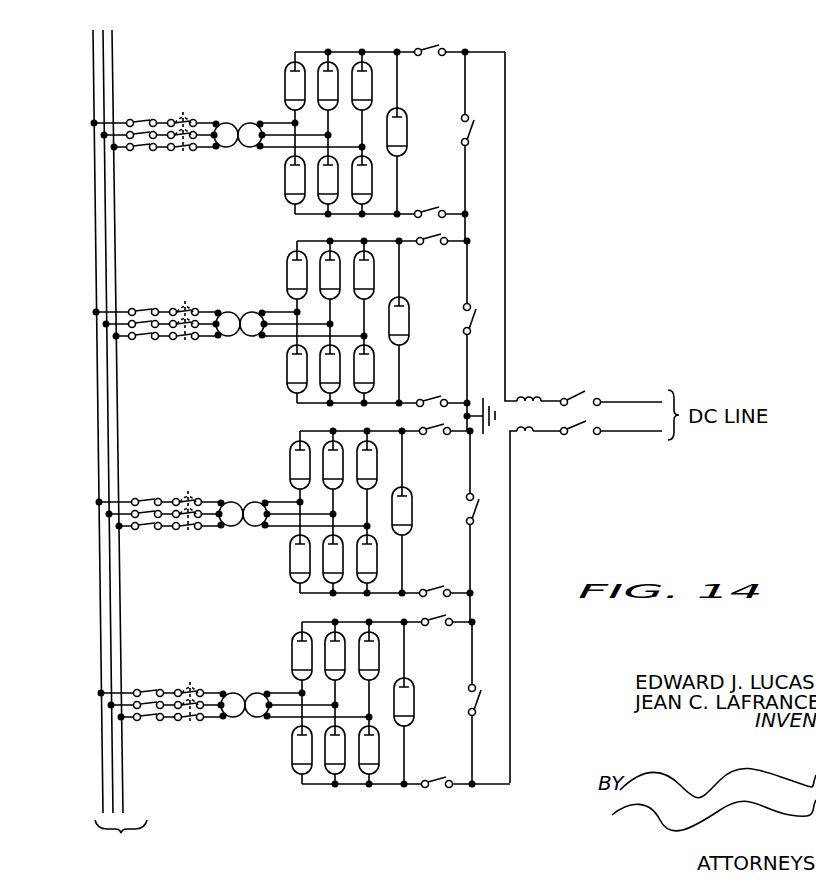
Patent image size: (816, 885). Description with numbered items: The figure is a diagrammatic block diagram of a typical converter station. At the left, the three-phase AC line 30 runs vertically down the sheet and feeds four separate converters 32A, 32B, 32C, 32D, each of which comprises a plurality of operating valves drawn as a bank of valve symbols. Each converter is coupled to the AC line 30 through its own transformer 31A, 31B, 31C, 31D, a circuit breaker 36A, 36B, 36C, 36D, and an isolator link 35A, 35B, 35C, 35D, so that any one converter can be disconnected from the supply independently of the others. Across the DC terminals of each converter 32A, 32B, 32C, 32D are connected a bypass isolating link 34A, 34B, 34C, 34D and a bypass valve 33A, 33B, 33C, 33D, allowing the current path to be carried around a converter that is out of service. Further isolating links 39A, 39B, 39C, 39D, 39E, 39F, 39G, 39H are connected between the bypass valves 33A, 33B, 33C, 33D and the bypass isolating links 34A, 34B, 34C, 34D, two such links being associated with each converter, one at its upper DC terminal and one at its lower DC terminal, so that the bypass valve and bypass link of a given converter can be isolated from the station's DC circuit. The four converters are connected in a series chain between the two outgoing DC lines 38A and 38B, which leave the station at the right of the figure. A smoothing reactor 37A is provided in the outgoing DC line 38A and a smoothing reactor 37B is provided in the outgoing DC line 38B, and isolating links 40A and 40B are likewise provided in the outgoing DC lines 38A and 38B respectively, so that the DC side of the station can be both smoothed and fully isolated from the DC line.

The AC line 30 is at (92, 367).
The transformer 31A is at (240, 70).
The transformer 31B is at (240, 302).
The transformer 31C is at (243, 492).
The transformer 31D is at (245, 682).
The converter 32A is at (262, 20).
The converter 32B is at (336, 293).
The converter 32C is at (337, 485).
The converter 32D is at (357, 676).
The bypass valve 33A is at (408, 68).
The bypass valve 33B is at (420, 322).
The bypass valve 33C is at (423, 512).
The bypass valve 33D is at (433, 703).
The bypass isolating link 34A is at (462, 78).
The bypass isolating link 34B is at (448, 335).
The bypass isolating link 34C is at (450, 525).
The bypass isolating link 34D is at (452, 703).
The isolator link 35A is at (150, 66).
The isolator link 35B is at (156, 305).
The isolator link 35C is at (159, 494).
The isolator link 35D is at (161, 685).
The circuit breaker 36A is at (183, 58).
The circuit breaker 36B is at (155, 294).
The circuit breaker 36C is at (162, 484).
The circuit breaker 36D is at (163, 675).
The smoothing reactor 37A is at (530, 397).
The smoothing reactor 37B is at (530, 436).
The outgoing DC line 38A is at (640, 400).
The outgoing DC line 38B is at (635, 434).
The isolating link 39A is at (428, 0).
The isolating link 39B is at (429, 198).
The isolating link 39C is at (431, 257).
The isolating link 39D is at (439, 386).
The isolating link 39E is at (434, 447).
The isolating link 39F is at (431, 576).
The isolating link 39G is at (442, 640).
The isolating link 39H is at (445, 806).
The isolating link 40A is at (583, 400).
The isolating link 40B is at (582, 434).